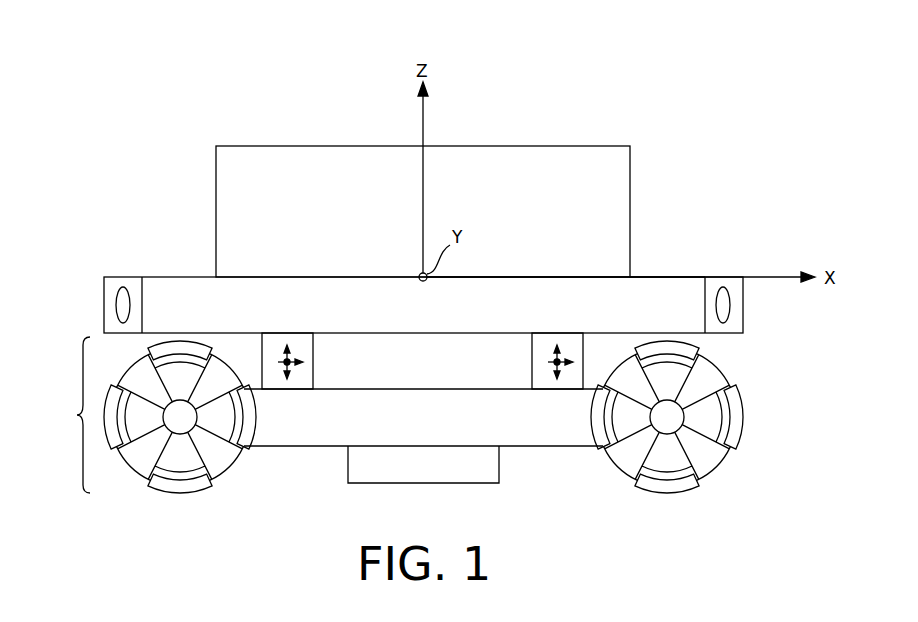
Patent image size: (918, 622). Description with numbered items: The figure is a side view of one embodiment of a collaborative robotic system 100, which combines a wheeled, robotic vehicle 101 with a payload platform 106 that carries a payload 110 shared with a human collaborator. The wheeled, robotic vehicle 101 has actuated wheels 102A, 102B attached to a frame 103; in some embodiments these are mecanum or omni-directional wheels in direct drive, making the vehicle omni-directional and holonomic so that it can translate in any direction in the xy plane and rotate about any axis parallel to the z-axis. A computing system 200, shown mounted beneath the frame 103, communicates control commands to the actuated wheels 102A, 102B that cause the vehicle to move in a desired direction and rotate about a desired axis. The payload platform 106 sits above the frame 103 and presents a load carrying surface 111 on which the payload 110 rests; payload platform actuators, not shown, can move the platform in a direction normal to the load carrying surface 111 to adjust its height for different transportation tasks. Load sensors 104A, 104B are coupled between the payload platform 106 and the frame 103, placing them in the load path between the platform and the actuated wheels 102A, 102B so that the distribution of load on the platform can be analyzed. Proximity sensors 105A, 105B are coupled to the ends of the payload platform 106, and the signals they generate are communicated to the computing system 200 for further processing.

The collaborative robotic system 100 is at (124, 39).
The wheeled, robotic vehicle 101 is at (76, 415).
The actuated wheel 102A is at (235, 463).
The actuated wheel 102B is at (612, 463).
The frame 103 is at (442, 431).
The load sensor 104A is at (313, 362).
The load sensor 104B is at (532, 362).
The proximity sensor 105A is at (116, 305).
The proximity sensor 105B is at (730, 305).
The payload platform 106 is at (442, 316).
The payload 110 is at (285, 220).
The load carrying surface 111 is at (658, 277).
The computing system 200 is at (442, 478).